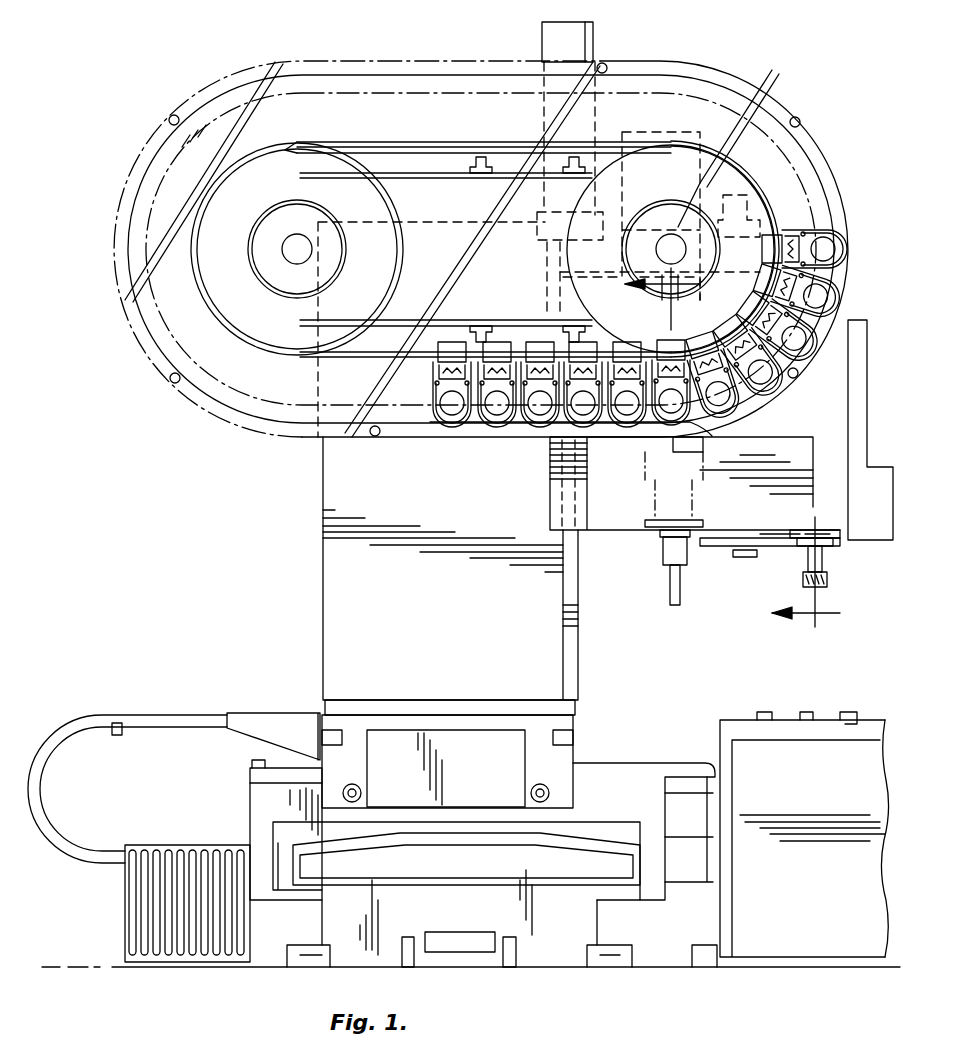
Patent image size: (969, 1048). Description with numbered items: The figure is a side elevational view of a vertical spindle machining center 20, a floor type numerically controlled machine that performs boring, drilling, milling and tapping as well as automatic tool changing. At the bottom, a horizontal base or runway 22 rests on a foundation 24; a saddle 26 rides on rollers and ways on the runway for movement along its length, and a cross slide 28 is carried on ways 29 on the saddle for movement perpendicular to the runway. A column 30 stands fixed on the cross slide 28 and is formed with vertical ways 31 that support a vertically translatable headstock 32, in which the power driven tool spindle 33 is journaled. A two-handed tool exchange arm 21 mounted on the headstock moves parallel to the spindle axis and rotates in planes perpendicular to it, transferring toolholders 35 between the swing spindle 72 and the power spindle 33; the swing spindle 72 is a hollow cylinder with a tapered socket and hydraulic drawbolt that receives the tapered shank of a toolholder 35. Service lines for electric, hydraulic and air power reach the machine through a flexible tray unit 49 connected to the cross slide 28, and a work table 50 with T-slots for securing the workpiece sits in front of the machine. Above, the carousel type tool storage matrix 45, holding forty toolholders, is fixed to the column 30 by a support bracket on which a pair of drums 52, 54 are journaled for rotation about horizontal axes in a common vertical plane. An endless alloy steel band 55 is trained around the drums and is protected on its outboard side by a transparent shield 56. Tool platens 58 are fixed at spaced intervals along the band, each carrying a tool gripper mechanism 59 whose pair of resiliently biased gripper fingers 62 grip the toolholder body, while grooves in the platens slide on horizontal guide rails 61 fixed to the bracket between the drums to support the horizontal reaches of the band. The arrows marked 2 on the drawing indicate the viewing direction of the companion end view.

The section line 2 is at (742, 451).
The machining center 20 is at (266, 530).
The tool exchange arm 21 is at (717, 556).
The runway 22 is at (570, 948).
The foundation 24 is at (655, 948).
The saddle 26 is at (256, 810).
The cross slide 28 is at (573, 750).
The ways 29 is at (250, 775).
The column 30 is at (322, 630).
The vertical ways 31 is at (585, 668).
The headstock 32 is at (600, 545).
The tool spindle 33 is at (833, 541).
The toolholder 35 is at (455, 420).
The tool storage matrix 45 is at (158, 384).
The flexible tray unit 49 is at (72, 715).
The work table 50 is at (835, 895).
The drum 52 is at (678, 155).
The drum 54 is at (228, 318).
The alloy steel band 55 is at (745, 198).
The transparent shield 56 is at (133, 283).
The tool platens 58 is at (527, 345).
The tool gripper mechanism 59 is at (435, 378).
The horizontal guide rails 61 is at (338, 166).
The gripper fingers 62 is at (520, 424).
The swing spindle 72 is at (650, 497).